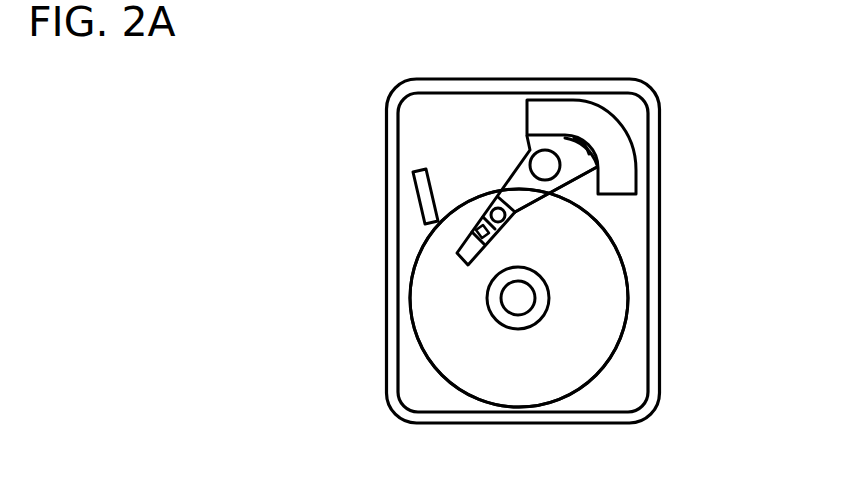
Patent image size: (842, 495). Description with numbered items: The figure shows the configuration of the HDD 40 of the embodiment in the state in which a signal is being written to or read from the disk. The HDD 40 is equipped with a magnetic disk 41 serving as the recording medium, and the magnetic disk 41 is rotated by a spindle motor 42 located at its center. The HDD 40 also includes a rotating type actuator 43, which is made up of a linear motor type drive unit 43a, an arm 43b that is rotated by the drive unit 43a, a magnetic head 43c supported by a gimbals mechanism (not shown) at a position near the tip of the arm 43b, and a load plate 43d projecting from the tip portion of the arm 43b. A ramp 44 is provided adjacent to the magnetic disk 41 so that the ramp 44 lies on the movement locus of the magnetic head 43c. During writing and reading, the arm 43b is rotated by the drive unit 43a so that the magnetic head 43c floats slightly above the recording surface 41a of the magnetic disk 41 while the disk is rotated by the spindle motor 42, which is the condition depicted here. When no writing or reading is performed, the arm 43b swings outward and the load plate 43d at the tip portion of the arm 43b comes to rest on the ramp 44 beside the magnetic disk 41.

The HDD 40 is at (663, 348).
The magnetic disk 41 is at (572, 360).
The recording surface 41a is at (443, 332).
The spindle motor 42 is at (512, 307).
The rotating type actuator 43 is at (512, 146).
The linear motor type drive unit 43a is at (617, 143).
The arm 43b is at (553, 193).
The magnetic head 43c is at (480, 224).
The load plate 43d is at (455, 258).
The ramp 44 is at (412, 182).